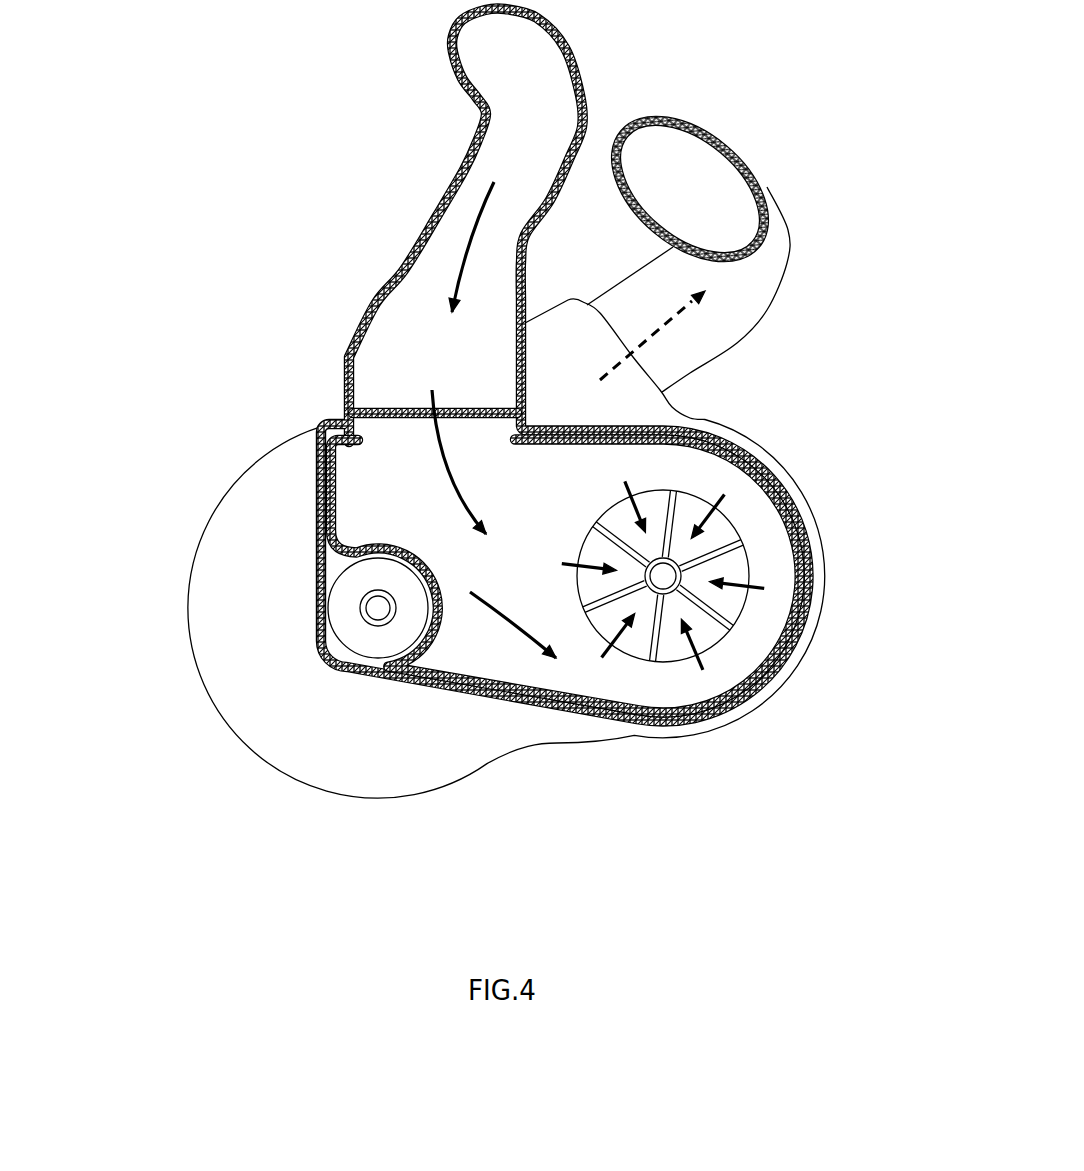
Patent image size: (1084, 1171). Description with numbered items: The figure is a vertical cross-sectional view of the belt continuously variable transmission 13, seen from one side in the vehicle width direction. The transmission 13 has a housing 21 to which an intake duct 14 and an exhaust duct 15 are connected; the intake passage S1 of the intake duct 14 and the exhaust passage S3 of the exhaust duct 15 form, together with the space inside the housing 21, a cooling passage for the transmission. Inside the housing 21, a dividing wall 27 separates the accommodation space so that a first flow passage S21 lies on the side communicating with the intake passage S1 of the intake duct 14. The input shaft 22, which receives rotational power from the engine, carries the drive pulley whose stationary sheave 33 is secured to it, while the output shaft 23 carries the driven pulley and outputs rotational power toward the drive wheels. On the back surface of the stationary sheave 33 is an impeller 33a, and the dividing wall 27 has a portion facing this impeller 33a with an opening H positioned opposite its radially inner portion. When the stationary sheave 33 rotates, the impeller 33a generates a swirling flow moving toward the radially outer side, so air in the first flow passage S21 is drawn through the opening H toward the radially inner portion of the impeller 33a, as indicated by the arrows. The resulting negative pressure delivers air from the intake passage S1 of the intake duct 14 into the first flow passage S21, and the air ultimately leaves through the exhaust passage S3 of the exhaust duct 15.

The belt continuously variable transmission 13 is at (173, 580).
The intake duct 14 is at (463, 147).
The exhaust duct 15 is at (772, 190).
The housing 21 is at (222, 500).
The input shaft 22 is at (681, 560).
The output shaft 23 is at (383, 618).
The dividing wall 27 is at (793, 627).
The stationary sheave 33 is at (718, 505).
The impeller 33a is at (681, 510).
The intake passage S1 is at (412, 275).
The exhaust passage S3 is at (766, 262).
The first flow passage S21 is at (577, 673).
The opening H is at (669, 655).